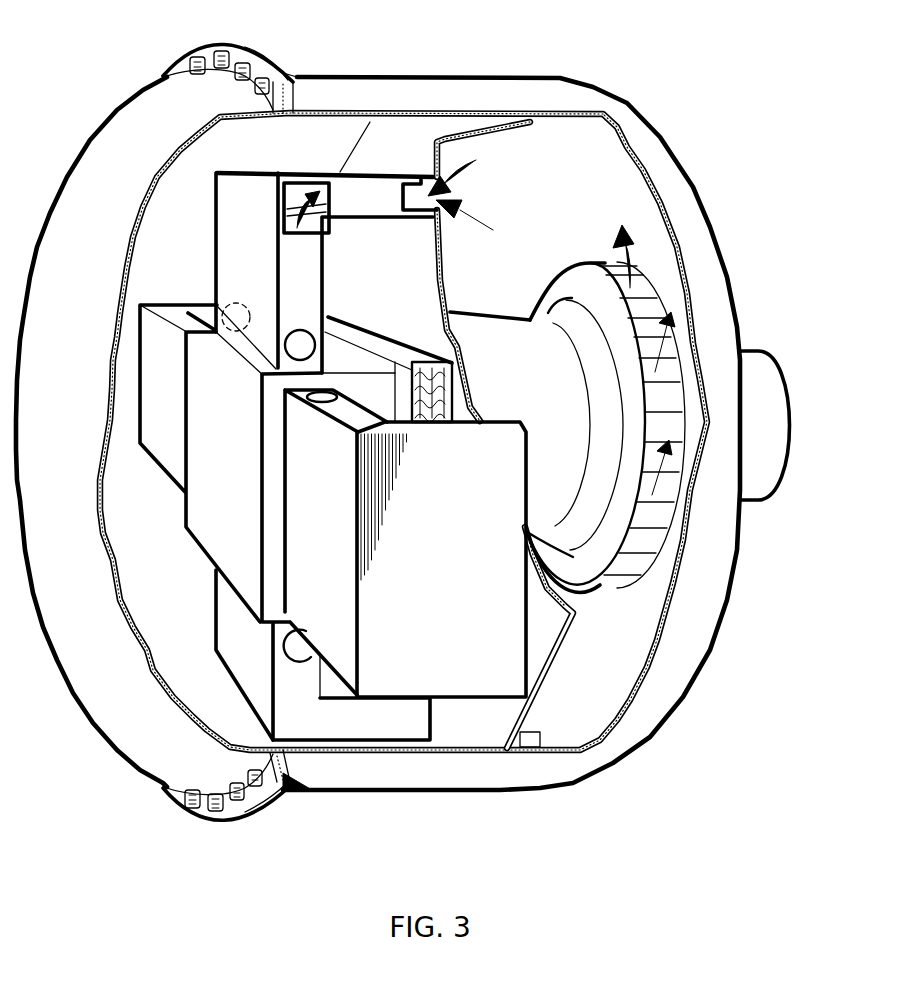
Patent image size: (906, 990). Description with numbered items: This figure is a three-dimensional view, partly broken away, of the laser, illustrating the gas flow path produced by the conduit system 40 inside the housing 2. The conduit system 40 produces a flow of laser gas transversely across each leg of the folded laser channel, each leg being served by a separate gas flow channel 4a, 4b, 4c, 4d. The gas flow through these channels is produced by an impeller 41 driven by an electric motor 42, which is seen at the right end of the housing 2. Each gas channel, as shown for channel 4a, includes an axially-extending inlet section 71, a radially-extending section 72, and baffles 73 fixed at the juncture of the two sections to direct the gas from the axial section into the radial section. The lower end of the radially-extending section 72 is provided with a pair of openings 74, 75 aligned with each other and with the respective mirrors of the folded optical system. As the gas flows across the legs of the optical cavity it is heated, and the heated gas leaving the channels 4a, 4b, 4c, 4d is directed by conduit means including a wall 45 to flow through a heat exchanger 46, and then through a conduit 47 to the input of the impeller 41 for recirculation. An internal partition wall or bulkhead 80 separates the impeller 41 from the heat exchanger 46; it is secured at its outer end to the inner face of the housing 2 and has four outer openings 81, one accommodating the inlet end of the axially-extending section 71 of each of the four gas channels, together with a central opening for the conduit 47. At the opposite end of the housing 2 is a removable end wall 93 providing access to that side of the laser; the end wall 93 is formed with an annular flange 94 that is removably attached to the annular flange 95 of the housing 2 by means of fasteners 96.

The housing 2 is at (378, 415).
The end wall 93 is at (117, 117).
The annular flange 94 is at (182, 70).
The annular flange 95 is at (284, 70).
The fasteners 96 is at (213, 53).
The outer openings 81 is at (413, 193).
The partition wall or bulkhead 80 is at (443, 263).
The axially-extending inlet section 71 is at (340, 171).
The baffles 73 is at (292, 195).
The radially-extending section 72 is at (313, 256).
The opening 74 is at (231, 300).
The opening 75 is at (308, 330).
The heat exchanger 46 is at (373, 343).
The conduit 47 is at (487, 320).
The conduit system 40 is at (298, 483).
The gas flow channel 4a is at (234, 228).
The gas flow channel 4b is at (167, 377).
The gas flow channel 4c is at (230, 621).
The gas flow channel 4d is at (348, 667).
The wall 45 is at (227, 507).
The impeller 41 is at (627, 573).
The electric motor 42 is at (750, 347).